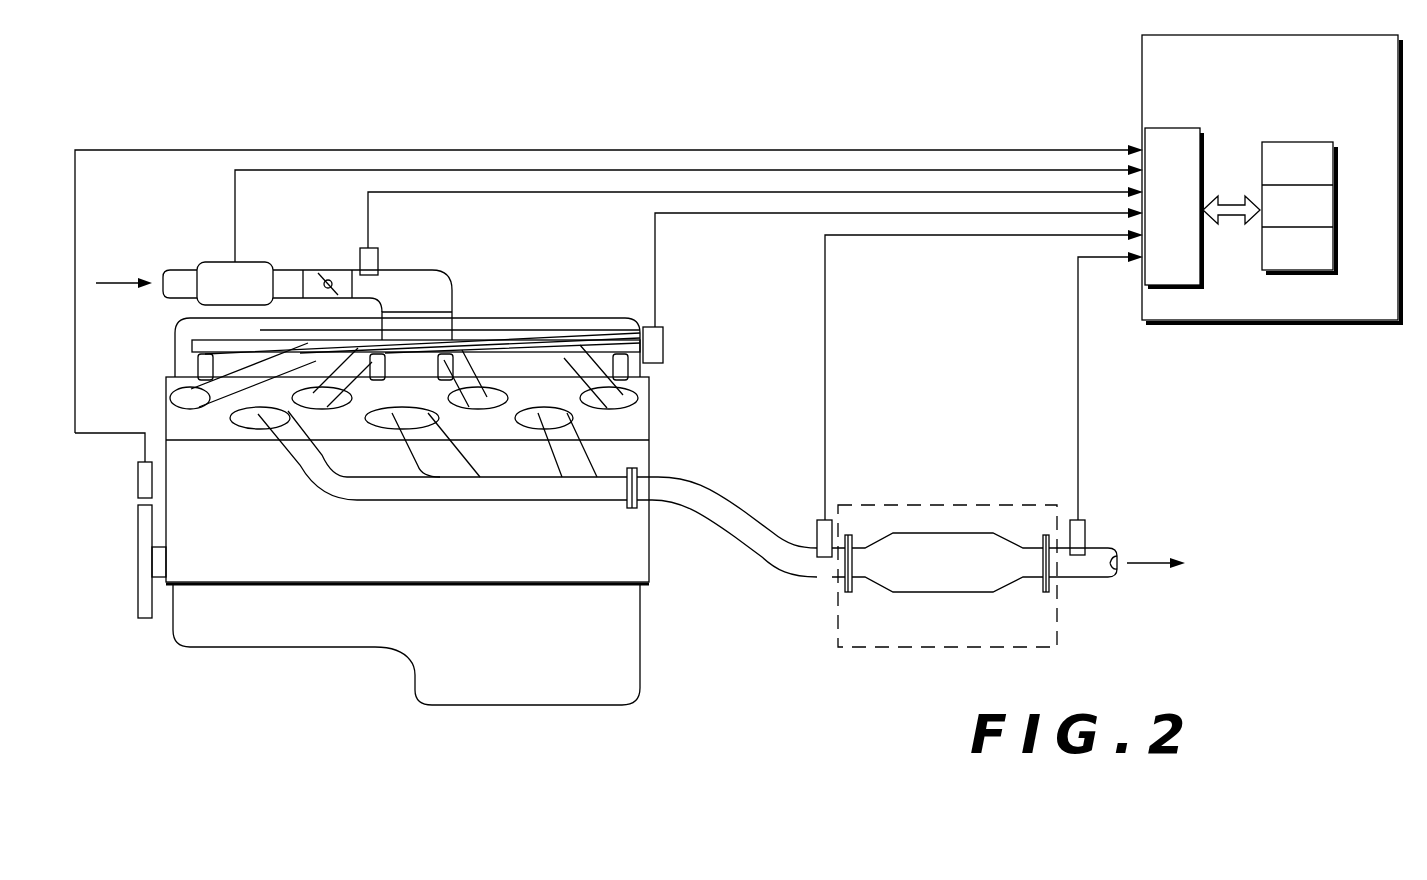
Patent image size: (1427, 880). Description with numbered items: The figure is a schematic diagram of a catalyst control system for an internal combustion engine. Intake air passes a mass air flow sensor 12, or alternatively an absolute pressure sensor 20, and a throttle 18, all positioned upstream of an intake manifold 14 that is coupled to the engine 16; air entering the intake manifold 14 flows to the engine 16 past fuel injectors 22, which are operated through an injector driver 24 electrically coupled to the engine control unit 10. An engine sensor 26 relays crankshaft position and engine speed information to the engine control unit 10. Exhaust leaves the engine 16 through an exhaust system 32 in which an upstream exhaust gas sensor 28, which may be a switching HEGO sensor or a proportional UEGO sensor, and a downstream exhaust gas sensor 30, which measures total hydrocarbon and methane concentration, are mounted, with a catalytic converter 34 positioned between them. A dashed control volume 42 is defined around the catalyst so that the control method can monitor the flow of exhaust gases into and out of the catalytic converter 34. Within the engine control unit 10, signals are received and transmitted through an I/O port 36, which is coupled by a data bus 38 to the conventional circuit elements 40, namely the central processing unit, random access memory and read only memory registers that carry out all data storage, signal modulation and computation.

The engine control unit 10 is at (1262, 323).
The mass air flow sensor 12 is at (204, 260).
The intake manifold 14 is at (433, 283).
The engine 16 is at (628, 558).
The throttle 18 is at (332, 266).
The absolute pressure sensor 20 is at (380, 252).
The fuel injectors 22 is at (197, 353).
The injector driver 24 is at (670, 344).
The engine sensor 26 is at (138, 478).
The upstream exhaust gas sensor 28 is at (817, 522).
The downstream exhaust gas sensor 30 is at (1085, 520).
The exhaust system 32 is at (703, 500).
The catalytic converter 34 is at (940, 577).
The I/O port 36 is at (1205, 268).
The data bus 38 is at (1233, 196).
The circuit elements 40 is at (1338, 194).
The control volume 42 is at (916, 505).